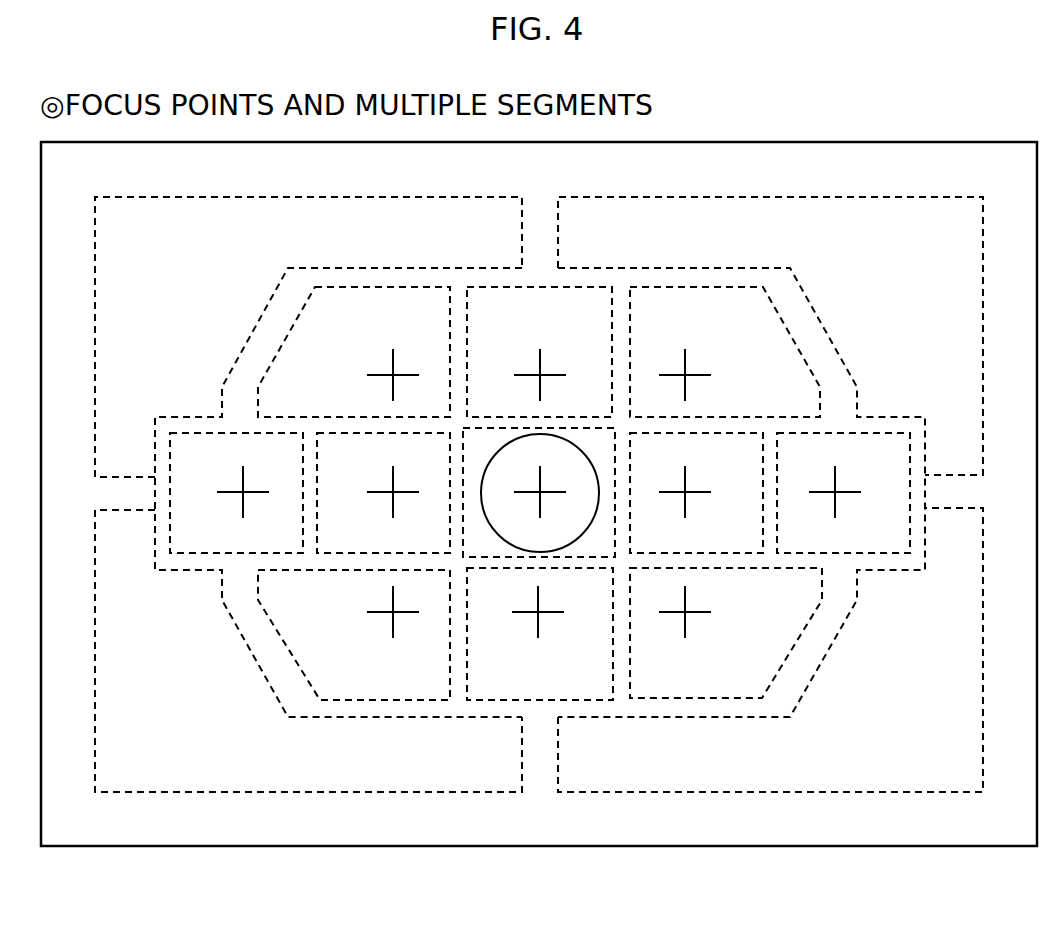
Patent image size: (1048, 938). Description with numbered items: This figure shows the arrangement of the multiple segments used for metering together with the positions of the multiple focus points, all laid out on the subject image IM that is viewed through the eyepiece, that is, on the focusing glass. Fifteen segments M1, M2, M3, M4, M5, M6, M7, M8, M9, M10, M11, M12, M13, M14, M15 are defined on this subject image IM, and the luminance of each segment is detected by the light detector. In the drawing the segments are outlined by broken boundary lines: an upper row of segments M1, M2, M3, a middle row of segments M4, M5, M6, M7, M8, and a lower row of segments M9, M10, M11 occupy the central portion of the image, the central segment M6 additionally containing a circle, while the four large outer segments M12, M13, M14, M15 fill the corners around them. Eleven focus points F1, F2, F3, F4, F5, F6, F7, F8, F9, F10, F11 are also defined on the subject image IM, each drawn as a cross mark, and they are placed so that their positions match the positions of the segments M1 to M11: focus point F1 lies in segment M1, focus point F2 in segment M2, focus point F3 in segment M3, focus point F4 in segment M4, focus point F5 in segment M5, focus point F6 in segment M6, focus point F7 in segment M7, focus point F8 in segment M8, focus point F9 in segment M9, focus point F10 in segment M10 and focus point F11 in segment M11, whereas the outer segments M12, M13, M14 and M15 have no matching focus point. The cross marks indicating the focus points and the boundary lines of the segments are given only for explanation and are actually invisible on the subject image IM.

The image (photographing screen) IM is at (396, 849).
The segment M1 is at (354, 352).
The segment M2 is at (539, 352).
The segment M3 is at (725, 352).
The segment M4 is at (236, 493).
The segment M5 is at (383, 493).
The segment M6 is at (539, 492).
The segment M7 is at (696, 493).
The segment M8 is at (843, 493).
The segment M9 is at (354, 635).
The segment M10 is at (540, 634).
The segment M11 is at (726, 633).
The segment M12 is at (308, 337).
The segment M13 is at (770, 336).
The segment M14 is at (308, 651).
The segment M15 is at (770, 650).
The focus point F1 is at (393, 375).
The focus point F2 is at (540, 375).
The focus point F3 is at (685, 375).
The focus point F4 is at (243, 491).
The focus point F5 is at (393, 491).
The focus point F6 is at (540, 492).
The focus point F7 is at (685, 491).
The focus point F8 is at (835, 491).
The focus point F9 is at (393, 619).
The focus point F10 is at (538, 619).
The focus point F11 is at (685, 619).